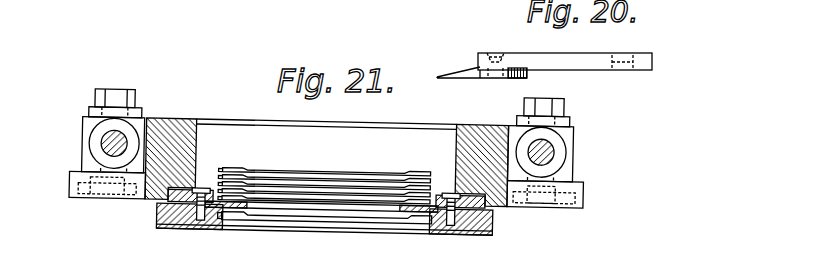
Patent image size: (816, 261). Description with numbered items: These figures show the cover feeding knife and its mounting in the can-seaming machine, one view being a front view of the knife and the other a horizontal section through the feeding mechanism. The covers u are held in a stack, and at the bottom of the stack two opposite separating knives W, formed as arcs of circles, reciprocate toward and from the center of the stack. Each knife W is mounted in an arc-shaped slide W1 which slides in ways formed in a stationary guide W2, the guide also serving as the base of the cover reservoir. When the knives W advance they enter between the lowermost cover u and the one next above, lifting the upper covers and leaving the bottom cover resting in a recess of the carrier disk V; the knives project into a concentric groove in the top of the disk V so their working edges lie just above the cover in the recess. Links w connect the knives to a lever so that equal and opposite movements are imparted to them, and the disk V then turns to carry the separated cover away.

In FIG. 20, the separating knife W is at (466, 68).
In FIG. 21, the separating knife W is at (205, 218).
In FIG. 20, the arc-shaped slide W1 is at (565, 62).
In FIG. 21, the arc-shaped slide W1 is at (471, 245).
In FIG. 21, the stationary guide W2 is at (175, 135).
In FIG. 21, the link w is at (100, 143).
In FIG. 21, the carrier disk V is at (158, 215).
In FIG. 21, the can head or cover u is at (325, 182).